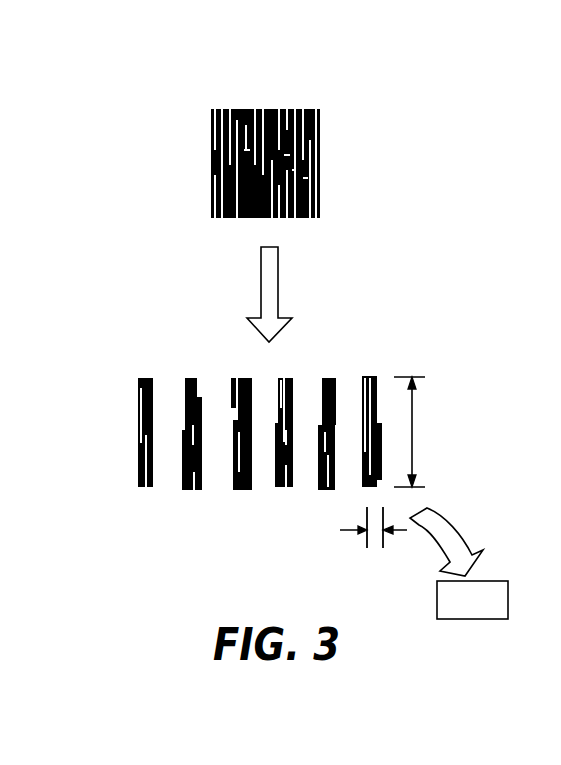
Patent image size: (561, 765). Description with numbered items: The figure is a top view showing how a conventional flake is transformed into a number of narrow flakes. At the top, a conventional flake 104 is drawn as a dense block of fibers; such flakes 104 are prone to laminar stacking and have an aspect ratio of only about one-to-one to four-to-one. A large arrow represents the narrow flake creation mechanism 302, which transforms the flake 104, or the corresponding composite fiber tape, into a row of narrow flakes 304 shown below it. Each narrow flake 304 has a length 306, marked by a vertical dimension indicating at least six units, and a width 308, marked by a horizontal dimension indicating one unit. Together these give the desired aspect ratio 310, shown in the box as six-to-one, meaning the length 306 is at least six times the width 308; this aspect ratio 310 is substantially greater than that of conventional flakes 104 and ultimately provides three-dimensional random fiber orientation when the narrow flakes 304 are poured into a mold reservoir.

The flakes 104 is at (213, 140).
The narrow flake creation mechanism 302 is at (262, 293).
The narrow flakes 304 is at (188, 540).
The length 306 is at (427, 419).
The width 308 is at (356, 542).
The desired aspect ratio 310 is at (497, 581).